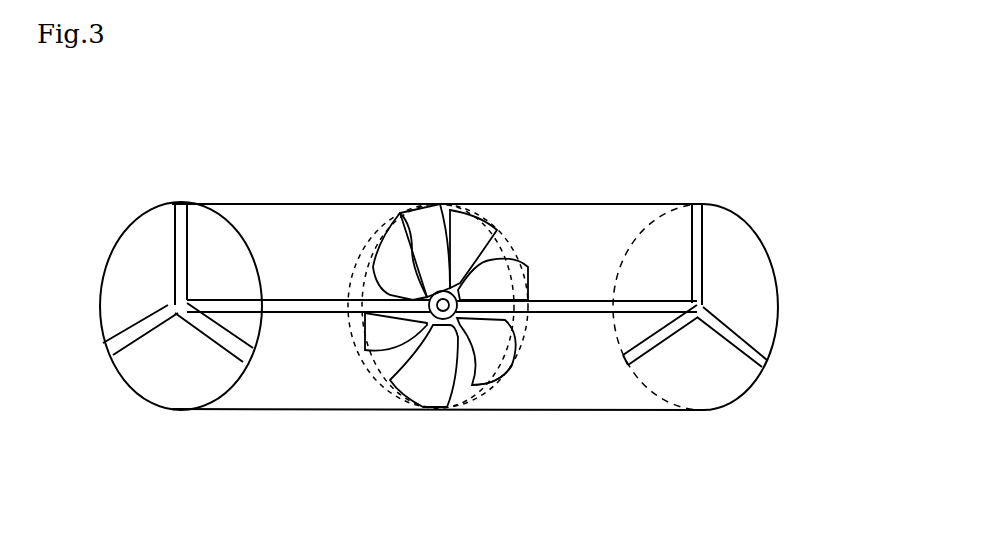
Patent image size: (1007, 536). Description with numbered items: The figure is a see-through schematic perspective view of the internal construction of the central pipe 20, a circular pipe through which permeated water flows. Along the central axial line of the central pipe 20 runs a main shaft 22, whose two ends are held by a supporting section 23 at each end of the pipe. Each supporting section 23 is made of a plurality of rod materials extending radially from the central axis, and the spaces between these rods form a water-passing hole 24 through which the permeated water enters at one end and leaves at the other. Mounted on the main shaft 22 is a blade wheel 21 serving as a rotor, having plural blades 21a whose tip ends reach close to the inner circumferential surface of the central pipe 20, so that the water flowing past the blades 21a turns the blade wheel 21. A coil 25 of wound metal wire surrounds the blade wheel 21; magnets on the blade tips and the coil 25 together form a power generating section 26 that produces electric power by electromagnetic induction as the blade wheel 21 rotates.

The central pipe 20 is at (573, 205).
The blade wheel 21 is at (395, 207).
The blade 21a is at (453, 205).
The main shaft 22 is at (300, 312).
The supporting section 23 is at (135, 348).
The water-passing hole 24 is at (130, 272).
The coil 25 is at (310, 195).
The power generating section 26 is at (522, 383).